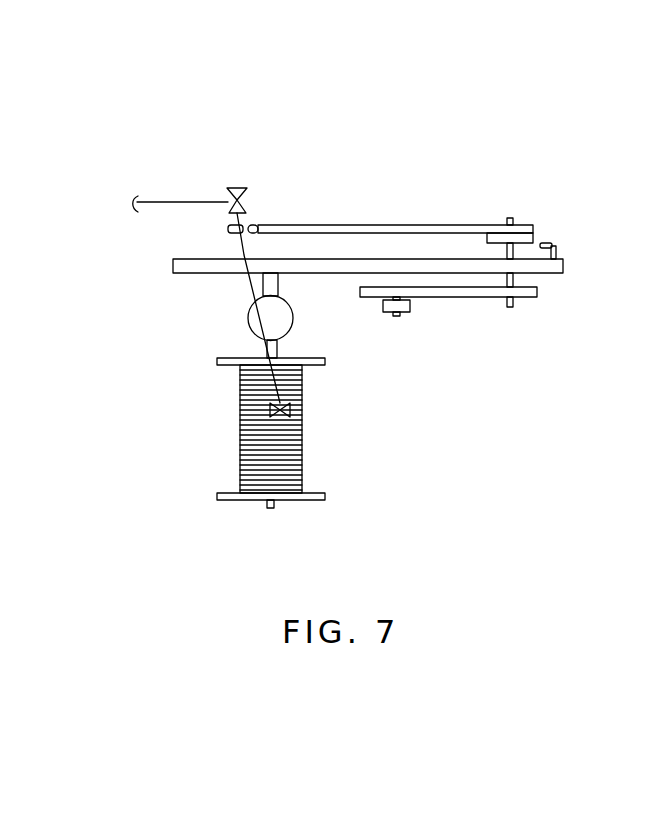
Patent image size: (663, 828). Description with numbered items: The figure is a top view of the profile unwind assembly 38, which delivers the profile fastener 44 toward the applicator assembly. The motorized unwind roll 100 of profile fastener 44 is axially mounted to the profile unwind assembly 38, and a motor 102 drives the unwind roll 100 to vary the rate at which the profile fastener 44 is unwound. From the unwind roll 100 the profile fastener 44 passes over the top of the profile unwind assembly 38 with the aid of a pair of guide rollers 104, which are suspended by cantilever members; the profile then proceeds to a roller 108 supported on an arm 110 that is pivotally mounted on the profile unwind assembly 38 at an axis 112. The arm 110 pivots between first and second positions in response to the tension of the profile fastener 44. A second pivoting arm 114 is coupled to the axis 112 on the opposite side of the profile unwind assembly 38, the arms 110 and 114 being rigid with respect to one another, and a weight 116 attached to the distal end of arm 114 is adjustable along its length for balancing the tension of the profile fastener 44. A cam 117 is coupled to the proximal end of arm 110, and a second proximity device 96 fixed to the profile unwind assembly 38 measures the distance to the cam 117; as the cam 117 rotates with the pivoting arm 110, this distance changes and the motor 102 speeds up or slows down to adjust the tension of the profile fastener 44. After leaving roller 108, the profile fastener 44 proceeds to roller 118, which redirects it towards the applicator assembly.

The profile unwind assembly 38 is at (453, 102).
The profile fastener 44 is at (167, 200).
The roller 118 is at (240, 187).
The roller 108 is at (250, 224).
The arm 110 is at (368, 225).
The cam 117 is at (534, 225).
The second proximity device 96 is at (548, 242).
The guide rollers 104 is at (200, 276).
The axis 112 is at (550, 276).
The second pivoting arm 114 is at (470, 297).
The weight 116 is at (407, 310).
The motor 102 is at (252, 334).
The unwind roll 100 is at (323, 495).